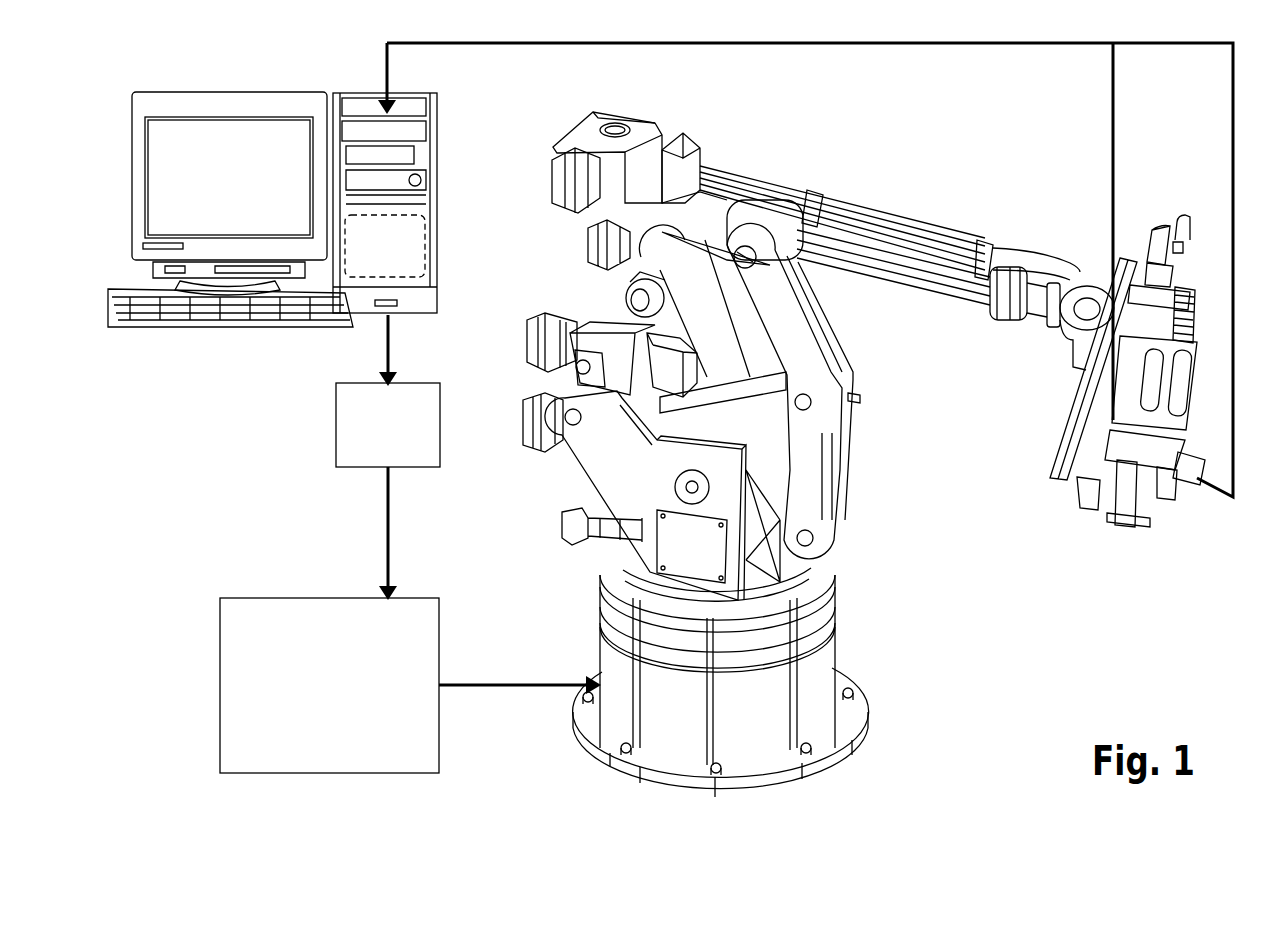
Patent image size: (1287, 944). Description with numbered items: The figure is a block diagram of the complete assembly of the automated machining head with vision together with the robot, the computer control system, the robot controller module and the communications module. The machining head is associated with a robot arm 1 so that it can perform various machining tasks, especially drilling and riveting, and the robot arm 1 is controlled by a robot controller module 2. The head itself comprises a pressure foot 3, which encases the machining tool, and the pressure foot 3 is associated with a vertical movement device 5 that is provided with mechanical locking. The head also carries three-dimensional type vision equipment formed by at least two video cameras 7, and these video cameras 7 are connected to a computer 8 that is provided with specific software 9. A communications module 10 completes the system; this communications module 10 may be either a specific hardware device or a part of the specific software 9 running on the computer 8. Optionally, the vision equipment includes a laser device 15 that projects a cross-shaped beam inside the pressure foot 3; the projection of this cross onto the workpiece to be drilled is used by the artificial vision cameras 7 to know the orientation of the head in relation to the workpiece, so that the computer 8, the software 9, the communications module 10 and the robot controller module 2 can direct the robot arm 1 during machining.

The robot arm 1 is at (810, 453).
The robot controller module 2 is at (329, 685).
The pressure foot 3 is at (1130, 527).
The vertical movement device 5 is at (1108, 370).
The video cameras 7 is at (1078, 483).
The computer 8 is at (272, 209).
The specific software 9 is at (385, 246).
The communications module 10 is at (388, 425).
The laser device 15 is at (1200, 477).